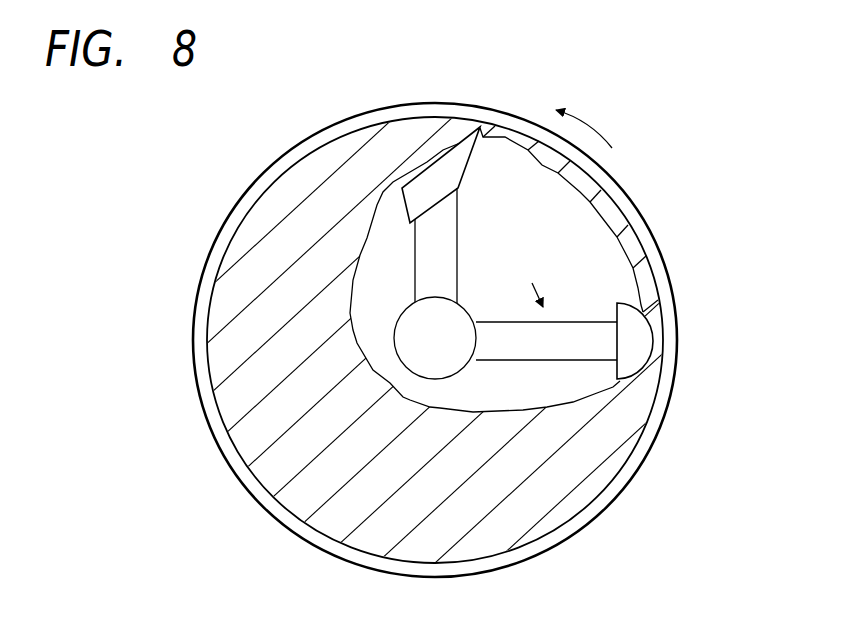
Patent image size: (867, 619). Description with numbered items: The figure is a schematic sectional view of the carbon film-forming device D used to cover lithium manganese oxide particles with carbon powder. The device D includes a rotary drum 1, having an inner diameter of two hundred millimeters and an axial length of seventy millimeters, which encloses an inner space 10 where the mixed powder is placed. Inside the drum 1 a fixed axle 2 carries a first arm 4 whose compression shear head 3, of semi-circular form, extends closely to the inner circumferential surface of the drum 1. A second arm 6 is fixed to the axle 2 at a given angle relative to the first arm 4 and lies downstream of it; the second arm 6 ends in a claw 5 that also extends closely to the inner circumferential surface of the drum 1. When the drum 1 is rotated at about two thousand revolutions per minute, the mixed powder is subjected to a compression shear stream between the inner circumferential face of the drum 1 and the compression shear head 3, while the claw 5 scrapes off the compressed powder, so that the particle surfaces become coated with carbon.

The rotary drum 1 is at (678, 316).
The fixed axle 2 is at (420, 358).
The compression shear head 3 is at (638, 355).
The first arm 4 is at (571, 322).
The claw 5 is at (438, 175).
The second arm 6 is at (437, 248).
The inner space 10 is at (505, 185).
The carbon film-forming device D is at (222, 518).